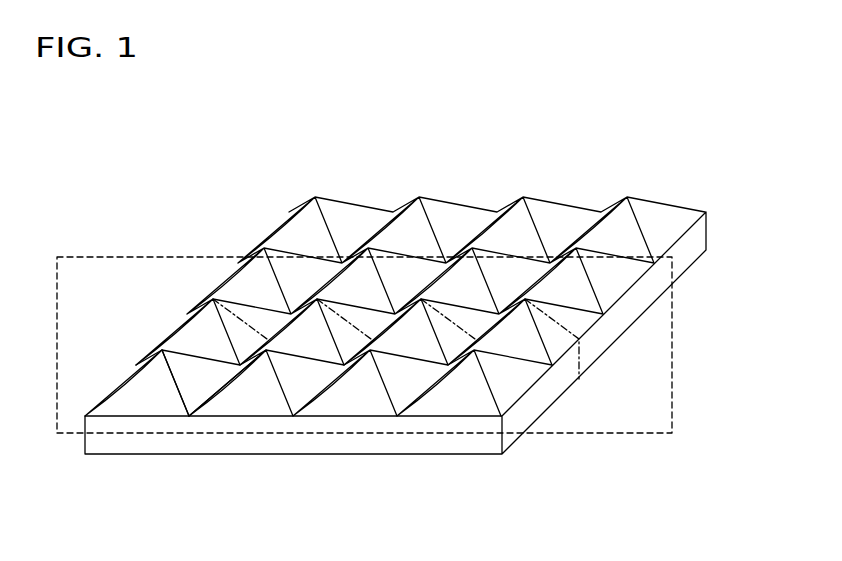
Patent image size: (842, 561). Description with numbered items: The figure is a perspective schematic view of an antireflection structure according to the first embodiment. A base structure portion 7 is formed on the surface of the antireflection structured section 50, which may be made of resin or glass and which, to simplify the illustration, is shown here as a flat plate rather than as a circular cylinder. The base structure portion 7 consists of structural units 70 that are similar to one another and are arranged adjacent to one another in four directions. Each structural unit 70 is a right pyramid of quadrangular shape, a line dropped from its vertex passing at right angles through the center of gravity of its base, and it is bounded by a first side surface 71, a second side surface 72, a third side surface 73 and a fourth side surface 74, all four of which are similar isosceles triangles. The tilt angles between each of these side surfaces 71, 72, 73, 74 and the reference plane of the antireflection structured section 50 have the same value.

The antireflection structured section 50 is at (572, 163).
The base structure portion 7 is at (450, 217).
The structural unit 70 is at (130, 398).
The first side surface 71 is at (135, 366).
The second side surface 72 is at (150, 403).
The third side surface 73 is at (218, 397).
The fourth side surface 74 is at (173, 350).